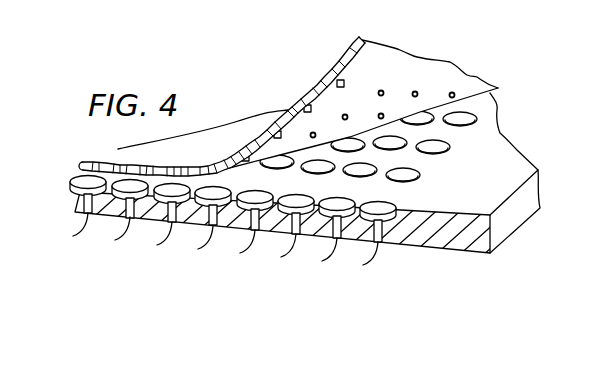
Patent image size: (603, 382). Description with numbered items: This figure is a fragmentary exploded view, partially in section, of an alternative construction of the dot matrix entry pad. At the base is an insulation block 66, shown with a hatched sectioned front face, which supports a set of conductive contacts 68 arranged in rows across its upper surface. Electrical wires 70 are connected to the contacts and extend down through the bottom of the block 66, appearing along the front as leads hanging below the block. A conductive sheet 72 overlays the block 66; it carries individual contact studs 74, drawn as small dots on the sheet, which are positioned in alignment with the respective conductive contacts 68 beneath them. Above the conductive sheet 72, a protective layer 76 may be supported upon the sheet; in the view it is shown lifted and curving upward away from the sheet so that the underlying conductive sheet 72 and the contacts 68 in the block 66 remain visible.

The insulation block 66 is at (540, 171).
The conductive contacts 68 is at (413, 205).
The electrical wires 70 is at (88, 221).
The conductive sheet 72 is at (468, 77).
The contact studs 74 is at (415, 91).
The protective layer 76 is at (346, 53).